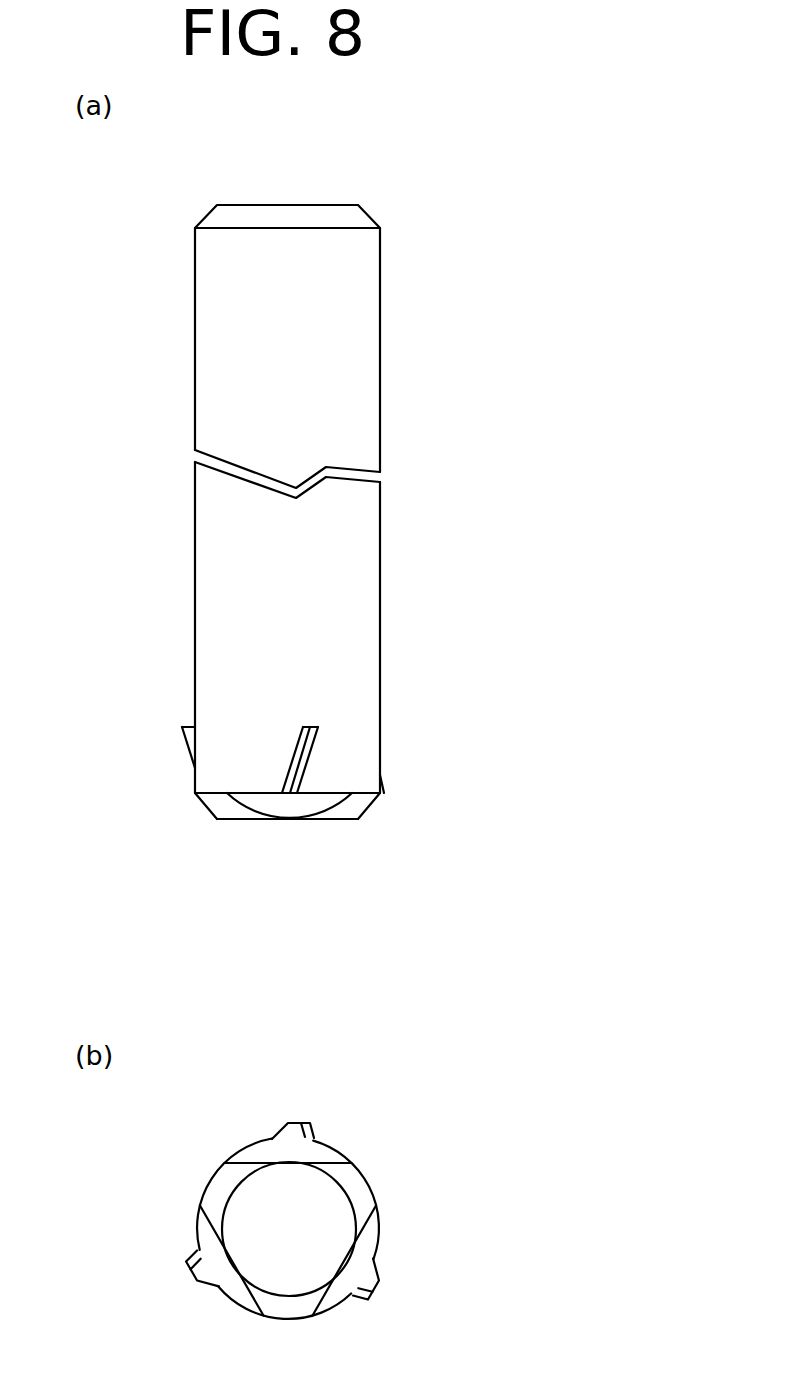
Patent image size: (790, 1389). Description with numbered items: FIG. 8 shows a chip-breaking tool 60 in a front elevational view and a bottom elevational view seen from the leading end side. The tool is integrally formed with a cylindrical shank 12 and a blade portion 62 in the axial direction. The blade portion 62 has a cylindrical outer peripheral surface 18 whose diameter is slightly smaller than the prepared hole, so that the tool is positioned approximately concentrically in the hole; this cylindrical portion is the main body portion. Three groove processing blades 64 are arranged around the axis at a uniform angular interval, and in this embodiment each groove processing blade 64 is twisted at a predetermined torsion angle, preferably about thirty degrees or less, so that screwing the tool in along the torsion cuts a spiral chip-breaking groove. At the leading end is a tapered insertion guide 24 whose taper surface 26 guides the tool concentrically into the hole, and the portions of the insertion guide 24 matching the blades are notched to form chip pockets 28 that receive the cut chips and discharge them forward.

The chip-breaking tool 60 is at (427, 227).
The shank 12 is at (362, 400).
The cylindrical outer peripheral surface 18 is at (347, 759).
The blade portion 62 is at (168, 785).
The insertion guide 24 is at (245, 829).
The taper surface 26 is at (370, 805).
The chip pocket 28 is at (307, 805).
The groove processing blade 64 is at (298, 745).